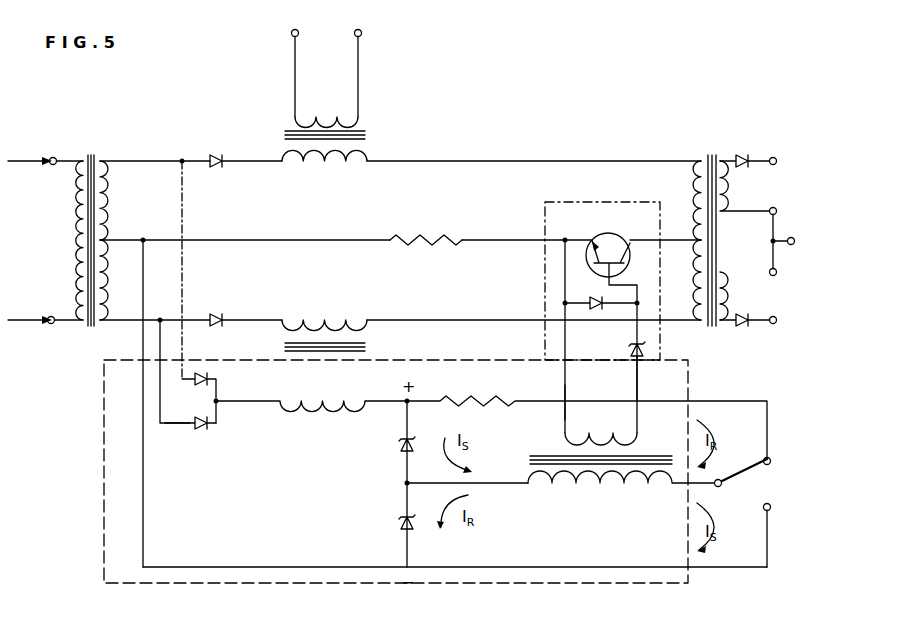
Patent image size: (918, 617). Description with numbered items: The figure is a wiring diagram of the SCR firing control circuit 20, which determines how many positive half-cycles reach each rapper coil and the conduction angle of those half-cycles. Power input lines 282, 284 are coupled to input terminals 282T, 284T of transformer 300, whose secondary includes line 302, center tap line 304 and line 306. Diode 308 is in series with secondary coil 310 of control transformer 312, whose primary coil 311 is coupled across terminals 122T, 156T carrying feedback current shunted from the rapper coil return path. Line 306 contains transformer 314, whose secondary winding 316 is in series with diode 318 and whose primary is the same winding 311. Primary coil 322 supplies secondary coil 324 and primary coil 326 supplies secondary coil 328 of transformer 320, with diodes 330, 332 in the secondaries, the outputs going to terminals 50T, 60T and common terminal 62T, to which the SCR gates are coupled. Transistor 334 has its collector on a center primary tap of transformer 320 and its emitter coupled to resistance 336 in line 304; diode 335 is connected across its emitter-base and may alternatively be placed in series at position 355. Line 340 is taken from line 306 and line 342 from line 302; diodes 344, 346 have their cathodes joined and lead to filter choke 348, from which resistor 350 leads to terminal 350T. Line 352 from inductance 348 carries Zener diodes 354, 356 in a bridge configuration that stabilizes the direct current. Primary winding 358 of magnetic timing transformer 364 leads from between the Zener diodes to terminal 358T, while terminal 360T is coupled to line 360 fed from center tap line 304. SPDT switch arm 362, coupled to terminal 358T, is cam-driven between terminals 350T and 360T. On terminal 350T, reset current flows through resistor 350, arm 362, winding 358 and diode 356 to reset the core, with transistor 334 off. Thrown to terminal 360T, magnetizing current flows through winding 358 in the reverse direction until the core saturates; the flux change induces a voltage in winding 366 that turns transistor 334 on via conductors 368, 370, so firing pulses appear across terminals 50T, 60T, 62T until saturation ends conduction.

The SCR firing control circuit 20 is at (485, 140).
The terminal 50T is at (772, 325).
The terminal 60T is at (790, 146).
The common terminal 62T is at (792, 237).
The terminal 122T is at (294, 29).
The terminal 156T is at (357, 29).
The power input line 282 is at (34, 153).
The input terminal 282T is at (76, 145).
The power input line 284 is at (37, 316).
The input terminal 284T is at (52, 325).
The transformer 300 is at (97, 157).
The secondary line 302 is at (180, 158).
The center tap line 304 is at (145, 237).
The secondary line 306 is at (140, 306).
The diode 308 is at (217, 153).
The secondary coil 310 is at (368, 158).
The primary coil 311 is at (354, 118).
The control transformer 312 is at (366, 136).
The transformer 314 is at (368, 348).
The secondary winding 316 is at (352, 318).
The diode 318 is at (217, 314).
The transformer 320 is at (712, 154).
The primary coil 322 is at (694, 203).
The secondary coil 324 is at (734, 203).
The primary coil 326 is at (698, 318).
The secondary coil 328 is at (732, 296).
The diode 330 is at (744, 154).
The diode 332 is at (744, 328).
The transistor 334 is at (601, 233).
The diode 335 is at (598, 299).
The resistance 336 is at (423, 237).
The line 340 is at (178, 430).
The line 342 is at (184, 214).
The diode rectifier 344 is at (210, 374).
The diode rectifier 346 is at (204, 432).
The filter choke 348 is at (332, 399).
The resistor 350 is at (481, 399).
The terminal 350T is at (770, 458).
The line 352 is at (401, 483).
The Zener diode 354 is at (400, 446).
The series diode position 355 is at (636, 362).
The Zener diode 356 is at (401, 528).
The primary winding 358 is at (586, 468).
The terminal 358T is at (722, 479).
The line 360 is at (245, 565).
The terminal 360T is at (771, 511).
The SPDT switch arm 362 is at (755, 470).
The magnetic timing transformer 364 is at (668, 456).
The winding 366 is at (600, 446).
The conductor 368 is at (563, 386).
The conductor 370 is at (630, 350).